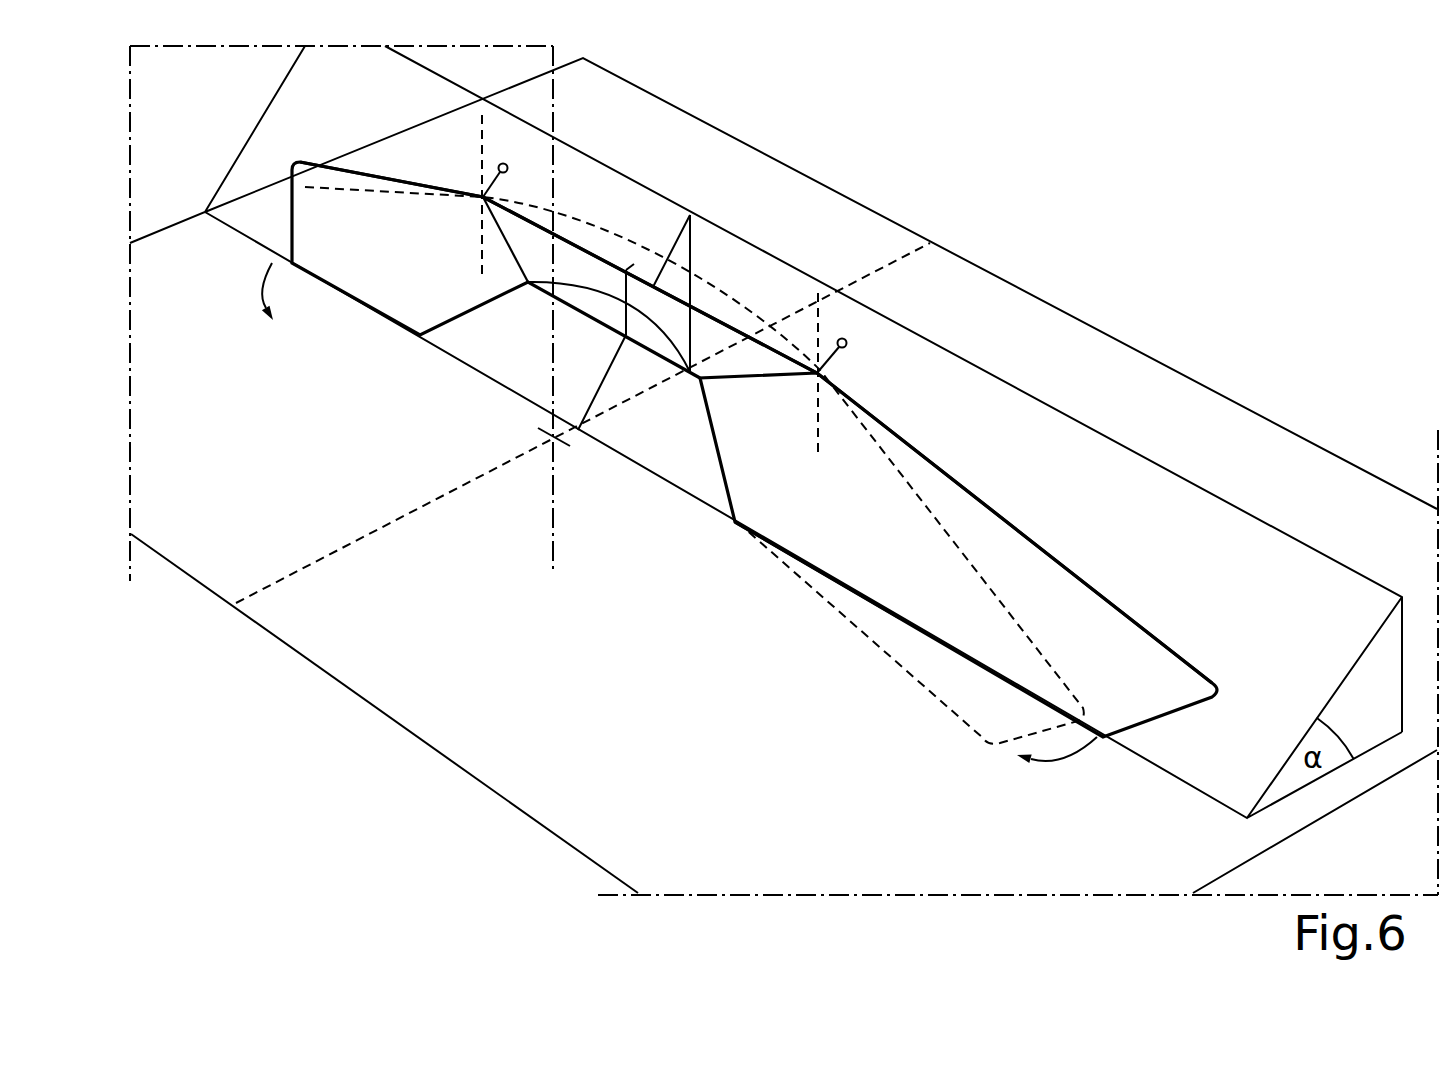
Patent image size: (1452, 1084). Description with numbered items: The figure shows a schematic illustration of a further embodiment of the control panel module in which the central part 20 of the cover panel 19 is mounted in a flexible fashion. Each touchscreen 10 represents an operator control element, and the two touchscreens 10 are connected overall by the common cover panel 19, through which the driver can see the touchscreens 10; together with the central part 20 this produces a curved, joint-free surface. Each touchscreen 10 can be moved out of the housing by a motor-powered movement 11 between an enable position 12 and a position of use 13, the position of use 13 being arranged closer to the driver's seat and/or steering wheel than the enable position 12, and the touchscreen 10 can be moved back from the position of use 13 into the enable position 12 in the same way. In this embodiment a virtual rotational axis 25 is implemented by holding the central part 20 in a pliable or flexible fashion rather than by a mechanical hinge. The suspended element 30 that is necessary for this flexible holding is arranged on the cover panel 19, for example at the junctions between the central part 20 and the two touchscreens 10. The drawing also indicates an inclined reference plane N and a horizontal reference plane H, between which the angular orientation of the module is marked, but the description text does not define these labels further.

The touchscreen 10 is at (349, 226).
The movement 11 is at (265, 287).
The enable position 12 is at (367, 173).
The position of use 13 is at (333, 313).
The cover panel 19 is at (783, 517).
The central part 20 is at (741, 286).
The virtual rotational axis 25 is at (555, 498).
The suspended element 30 is at (505, 163).
The inclined plane N is at (1362, 556).
The horizontal plane H is at (339, 683).